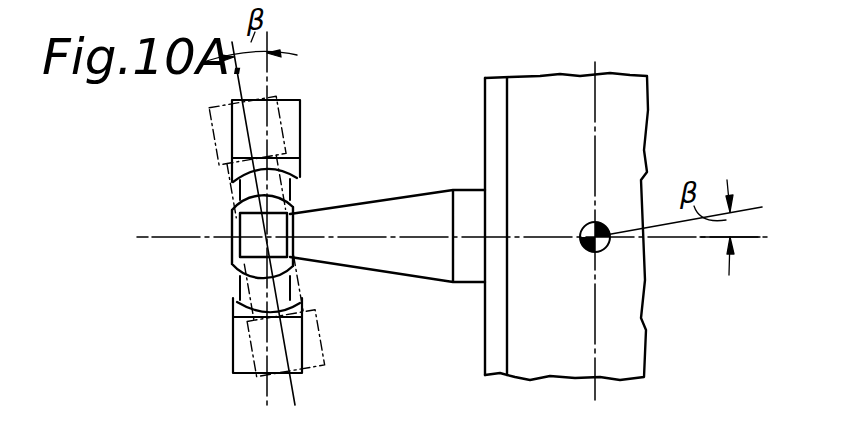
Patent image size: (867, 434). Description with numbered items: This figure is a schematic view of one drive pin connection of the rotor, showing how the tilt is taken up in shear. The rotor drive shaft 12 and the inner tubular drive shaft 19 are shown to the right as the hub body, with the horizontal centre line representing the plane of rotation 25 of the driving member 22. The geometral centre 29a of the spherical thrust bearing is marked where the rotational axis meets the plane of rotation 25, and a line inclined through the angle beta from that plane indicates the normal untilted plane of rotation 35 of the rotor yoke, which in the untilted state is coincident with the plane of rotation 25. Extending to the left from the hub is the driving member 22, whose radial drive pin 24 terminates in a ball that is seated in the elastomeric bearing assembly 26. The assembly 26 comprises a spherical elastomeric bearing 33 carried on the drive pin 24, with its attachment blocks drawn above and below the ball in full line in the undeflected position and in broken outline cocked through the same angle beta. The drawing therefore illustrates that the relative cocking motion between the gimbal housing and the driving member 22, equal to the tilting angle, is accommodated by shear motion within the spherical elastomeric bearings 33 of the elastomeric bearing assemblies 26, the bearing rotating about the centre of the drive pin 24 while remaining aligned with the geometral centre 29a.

The rotor drive shaft 12 is at (521, 226).
The inner tubular drive shaft 19 is at (492, 333).
The driving member 22 is at (419, 217).
The drive pin 24 is at (250, 243).
The plane of rotation 25 is at (743, 240).
The elastomeric bearing assembly 26 is at (190, 215).
The geometral centre 29a is at (603, 246).
The spherical elastomeric bearing 33 is at (243, 288).
The normal untilted plane of rotation 35 is at (747, 205).